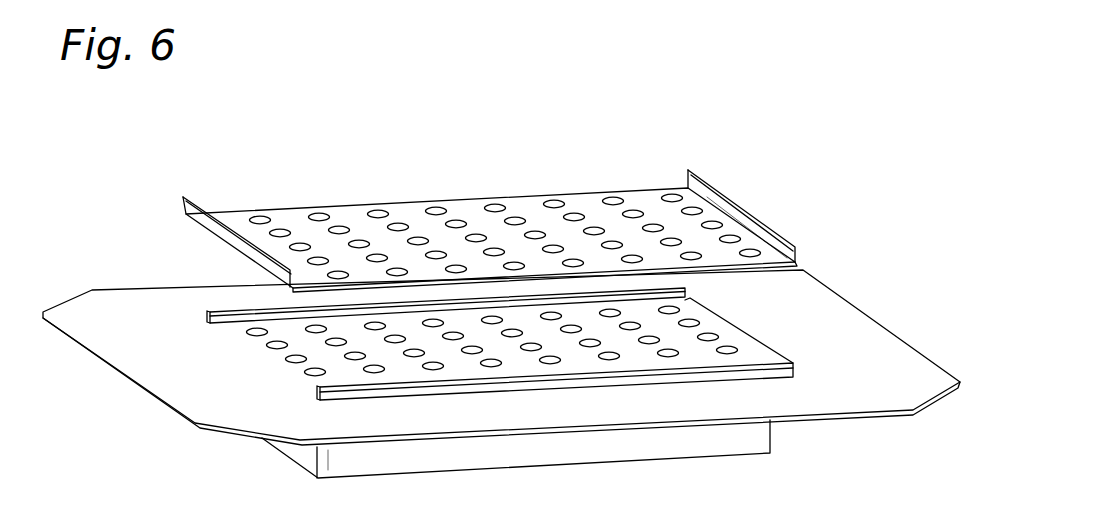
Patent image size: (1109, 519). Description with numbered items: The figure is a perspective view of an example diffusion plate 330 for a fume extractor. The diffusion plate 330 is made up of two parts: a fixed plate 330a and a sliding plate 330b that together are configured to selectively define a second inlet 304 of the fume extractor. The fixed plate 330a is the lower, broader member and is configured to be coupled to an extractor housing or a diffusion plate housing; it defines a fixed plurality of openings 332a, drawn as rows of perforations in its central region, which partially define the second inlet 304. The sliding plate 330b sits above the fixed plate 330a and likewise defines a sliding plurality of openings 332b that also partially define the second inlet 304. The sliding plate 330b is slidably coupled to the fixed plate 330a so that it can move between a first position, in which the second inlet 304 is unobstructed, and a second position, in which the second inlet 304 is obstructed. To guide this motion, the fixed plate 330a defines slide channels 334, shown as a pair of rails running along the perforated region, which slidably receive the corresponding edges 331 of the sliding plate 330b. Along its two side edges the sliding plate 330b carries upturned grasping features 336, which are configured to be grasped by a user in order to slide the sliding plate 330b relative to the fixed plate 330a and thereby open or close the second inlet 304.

The diffusion plate 330 is at (281, 128).
The fixed plate 330a is at (875, 319).
The sliding plate 330b is at (790, 240).
The edges 331 is at (427, 283).
The second inlet 304 is at (532, 212).
The fixed plurality of openings 332a is at (737, 320).
The sliding plurality of openings 332b is at (770, 252).
The slide channels 334 is at (230, 311).
The grasping features 336 is at (184, 197).